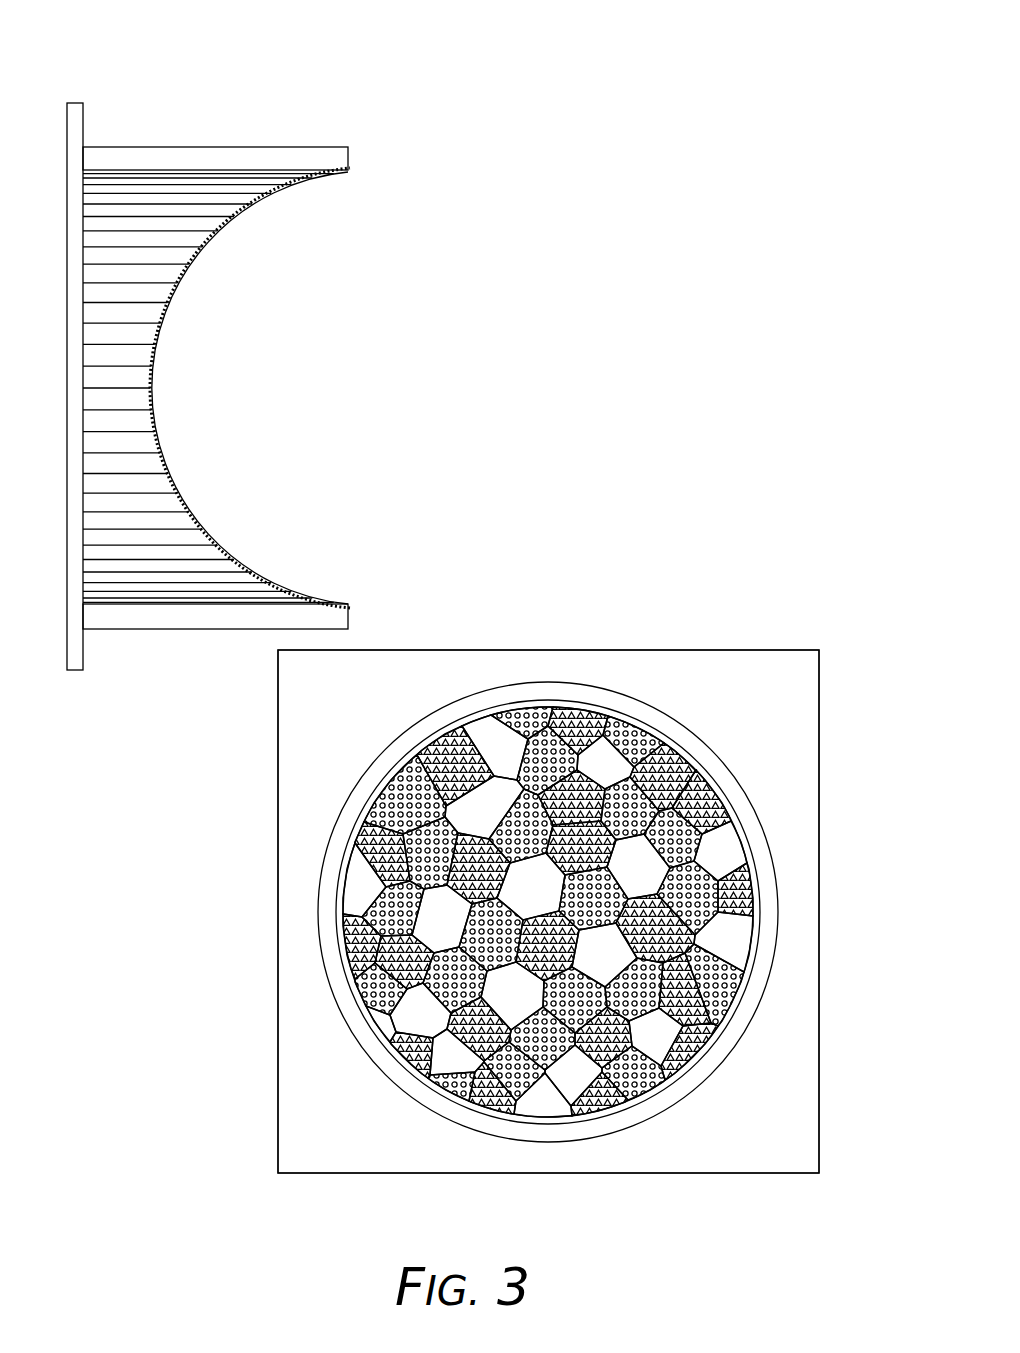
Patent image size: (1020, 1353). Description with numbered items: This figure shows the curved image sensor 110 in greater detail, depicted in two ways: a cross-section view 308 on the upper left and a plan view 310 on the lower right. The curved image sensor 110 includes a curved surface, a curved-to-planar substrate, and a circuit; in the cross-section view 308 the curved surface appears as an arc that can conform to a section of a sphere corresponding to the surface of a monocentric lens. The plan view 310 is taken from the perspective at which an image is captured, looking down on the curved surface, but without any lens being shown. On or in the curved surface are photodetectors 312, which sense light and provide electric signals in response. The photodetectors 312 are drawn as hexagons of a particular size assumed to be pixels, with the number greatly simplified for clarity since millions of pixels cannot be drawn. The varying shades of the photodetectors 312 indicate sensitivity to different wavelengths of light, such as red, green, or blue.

The curved image sensor 110 is at (775, 98).
The cross-section view 308 is at (420, 110).
The plan view 310 is at (780, 615).
The photodetectors 312 is at (467, 823).